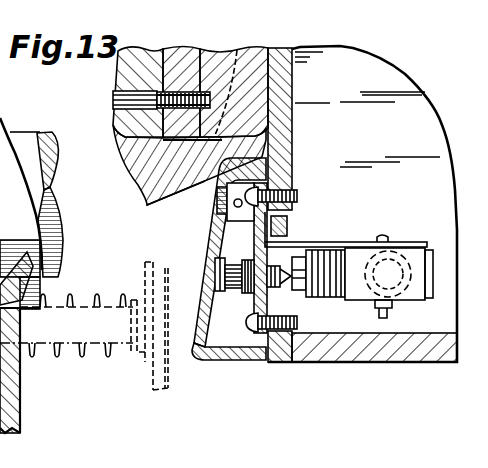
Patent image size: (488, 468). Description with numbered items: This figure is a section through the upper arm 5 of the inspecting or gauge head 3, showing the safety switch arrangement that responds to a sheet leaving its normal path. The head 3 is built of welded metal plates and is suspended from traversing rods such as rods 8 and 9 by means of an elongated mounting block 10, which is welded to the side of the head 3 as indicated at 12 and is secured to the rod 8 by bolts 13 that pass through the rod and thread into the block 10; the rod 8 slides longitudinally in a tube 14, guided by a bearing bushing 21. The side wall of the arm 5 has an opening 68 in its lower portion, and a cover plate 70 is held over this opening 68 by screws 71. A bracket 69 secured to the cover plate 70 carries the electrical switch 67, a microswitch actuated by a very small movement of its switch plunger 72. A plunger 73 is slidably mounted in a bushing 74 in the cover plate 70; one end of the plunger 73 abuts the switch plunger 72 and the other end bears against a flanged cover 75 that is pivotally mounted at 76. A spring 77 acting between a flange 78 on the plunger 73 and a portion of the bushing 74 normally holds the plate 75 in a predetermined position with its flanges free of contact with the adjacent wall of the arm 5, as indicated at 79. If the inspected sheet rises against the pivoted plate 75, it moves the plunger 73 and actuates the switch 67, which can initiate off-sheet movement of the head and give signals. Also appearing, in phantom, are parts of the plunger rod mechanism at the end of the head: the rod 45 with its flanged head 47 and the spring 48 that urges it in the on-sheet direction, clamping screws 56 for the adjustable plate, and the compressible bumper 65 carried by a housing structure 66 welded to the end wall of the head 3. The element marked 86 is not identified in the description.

The gauge head 3 is at (20, 410).
The upper arm 5 is at (303, 0).
The traversing rod 8 is at (128, 82).
The traversing rod 9 is at (28, 137).
The mounting block 10 is at (242, 63).
The weld 12 is at (293, 133).
The bolt 13 is at (127, 100).
The tube 14 is at (142, 184).
The bearing bushing 21 is at (127, 170).
The rod 45 is at (100, 336).
The flanged head 47 is at (137, 320).
The spring 48 is at (57, 361).
The clamping screw 56 is at (20, 258).
The bumper 65 is at (152, 367).
The housing structure 66 is at (162, 385).
The electrical switch 67 is at (411, 253).
The opening 68 is at (285, 213).
The bracket 69 is at (367, 242).
The cover plate 70 is at (257, 243).
The screw 71 is at (296, 186).
The switch plunger 72 is at (285, 285).
The plunger 73 is at (283, 270).
The bushing 74 is at (248, 293).
The flanged cover 75 is at (213, 240).
The pivot 76 is at (233, 203).
The spring 77 is at (224, 260).
The flange 78 is at (219, 283).
The clearance 79 is at (268, 360).
The frame portion 86 is at (371, 11).